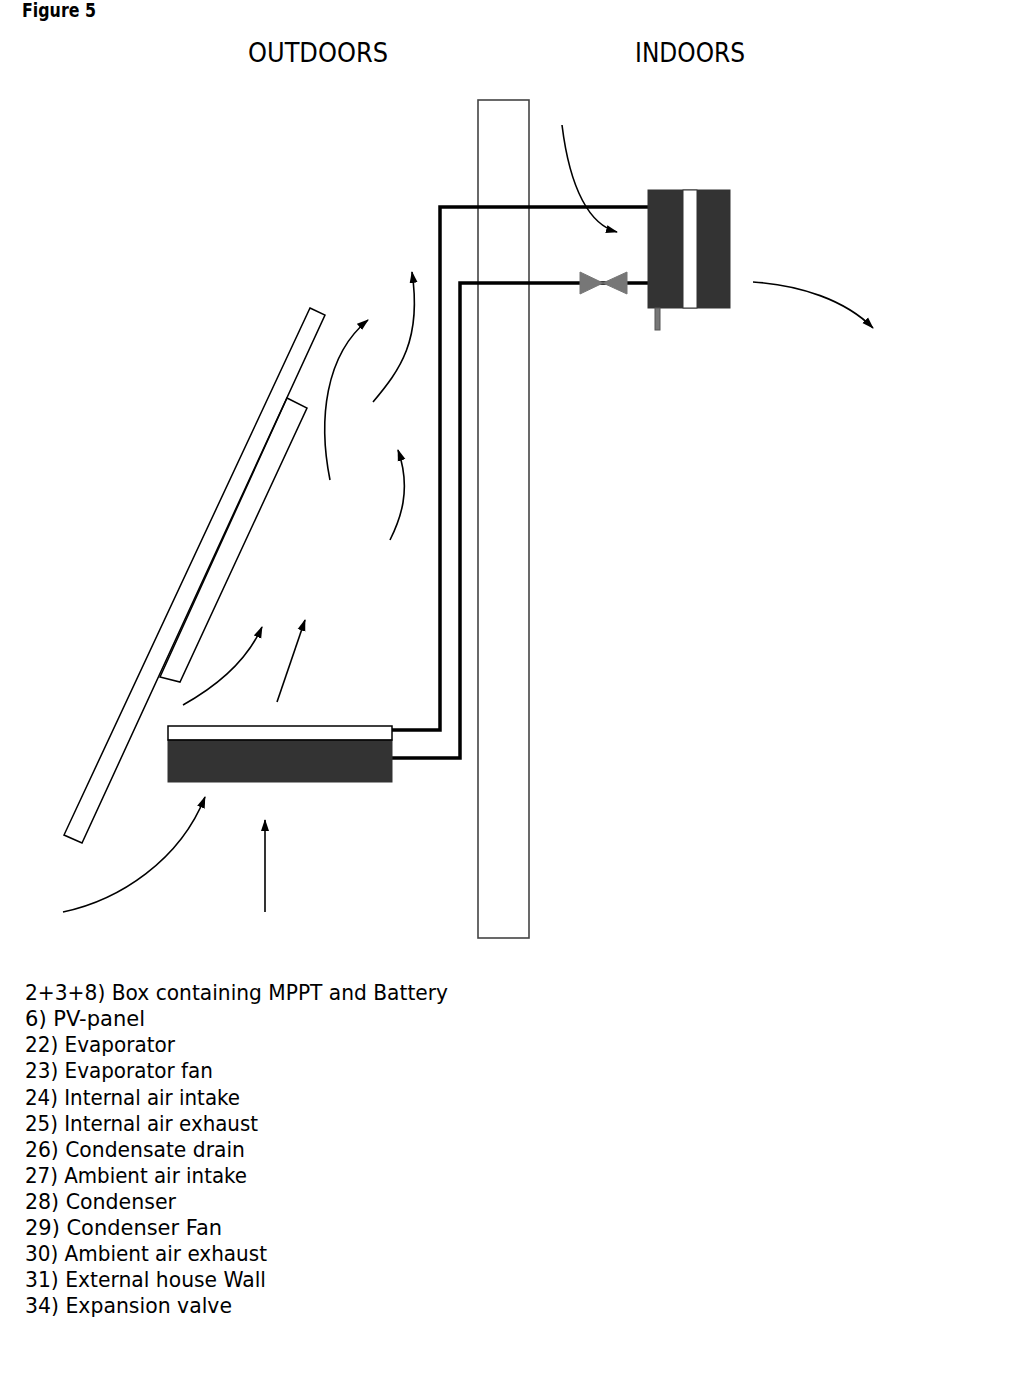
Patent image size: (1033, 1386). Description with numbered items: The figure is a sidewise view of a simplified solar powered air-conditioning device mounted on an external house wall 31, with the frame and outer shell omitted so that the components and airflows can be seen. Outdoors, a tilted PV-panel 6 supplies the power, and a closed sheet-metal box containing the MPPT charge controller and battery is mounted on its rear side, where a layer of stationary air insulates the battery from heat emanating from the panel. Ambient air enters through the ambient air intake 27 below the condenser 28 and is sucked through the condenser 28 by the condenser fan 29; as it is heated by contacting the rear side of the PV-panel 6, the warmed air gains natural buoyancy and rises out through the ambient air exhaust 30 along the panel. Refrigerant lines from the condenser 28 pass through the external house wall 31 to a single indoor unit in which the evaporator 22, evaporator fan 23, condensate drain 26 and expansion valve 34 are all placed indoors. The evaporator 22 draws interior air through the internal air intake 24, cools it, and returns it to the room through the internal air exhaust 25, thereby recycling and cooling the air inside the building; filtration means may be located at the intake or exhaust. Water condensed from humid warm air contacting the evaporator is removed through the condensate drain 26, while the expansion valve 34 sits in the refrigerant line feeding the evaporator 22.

The PV-panel 6 is at (190, 570).
The evaporator 22 is at (720, 308).
The evaporator fan 23 is at (693, 308).
The internal air intake 24 is at (630, 243).
The internal air exhaust 25 is at (758, 253).
The condensate drain 26 is at (657, 330).
The ambient air intake 27 is at (380, 820).
The condenser 28 is at (290, 782).
The condenser fan 29 is at (290, 725).
The ambient air exhaust 30 is at (378, 298).
The external house wall 31 is at (528, 532).
The expansion valve 34 is at (592, 288).